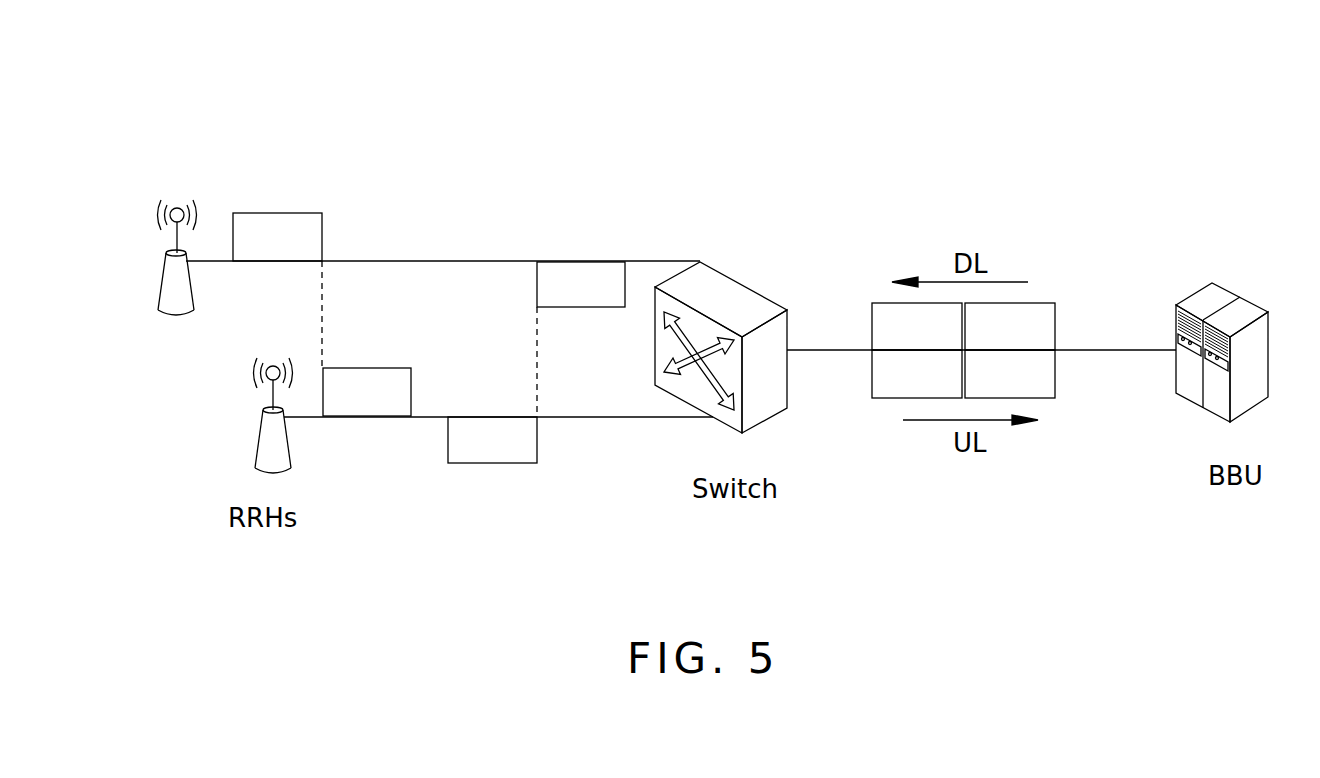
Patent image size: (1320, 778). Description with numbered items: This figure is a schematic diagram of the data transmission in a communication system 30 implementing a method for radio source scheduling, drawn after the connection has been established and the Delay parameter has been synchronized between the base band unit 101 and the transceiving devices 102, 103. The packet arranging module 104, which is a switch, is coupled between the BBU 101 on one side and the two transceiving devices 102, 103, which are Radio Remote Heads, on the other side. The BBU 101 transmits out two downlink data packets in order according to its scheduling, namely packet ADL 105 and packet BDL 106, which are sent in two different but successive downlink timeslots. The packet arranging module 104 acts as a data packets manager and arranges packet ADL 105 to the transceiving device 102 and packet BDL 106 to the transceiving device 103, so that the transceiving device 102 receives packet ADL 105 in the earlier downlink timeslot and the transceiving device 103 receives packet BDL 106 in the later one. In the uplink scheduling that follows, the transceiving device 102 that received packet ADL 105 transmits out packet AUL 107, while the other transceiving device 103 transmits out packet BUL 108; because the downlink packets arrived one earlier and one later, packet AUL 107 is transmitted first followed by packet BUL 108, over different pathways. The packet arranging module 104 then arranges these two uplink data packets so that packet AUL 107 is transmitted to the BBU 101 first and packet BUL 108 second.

The communication system 30 is at (670, 76).
The base band unit 101 is at (1233, 287).
The transceiving device 102 is at (168, 272).
The transceiving device 103 is at (268, 438).
The packet arranging module 104 is at (745, 283).
The packet ADL 105 is at (300, 213).
The packet BDL 106 is at (385, 368).
The packet AUL 107 is at (565, 307).
The packet BUL 108 is at (505, 463).